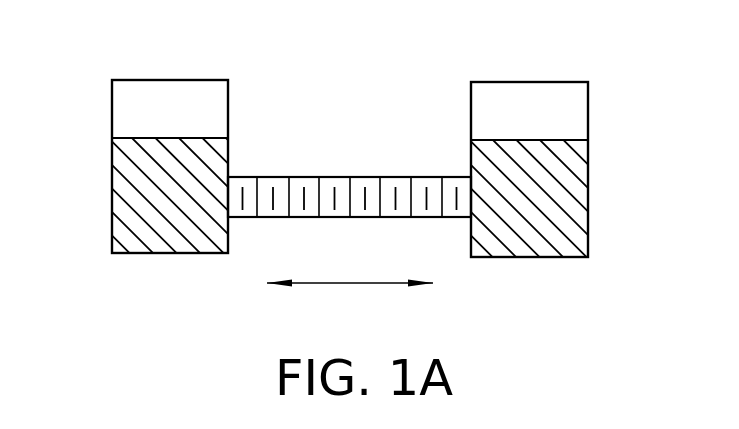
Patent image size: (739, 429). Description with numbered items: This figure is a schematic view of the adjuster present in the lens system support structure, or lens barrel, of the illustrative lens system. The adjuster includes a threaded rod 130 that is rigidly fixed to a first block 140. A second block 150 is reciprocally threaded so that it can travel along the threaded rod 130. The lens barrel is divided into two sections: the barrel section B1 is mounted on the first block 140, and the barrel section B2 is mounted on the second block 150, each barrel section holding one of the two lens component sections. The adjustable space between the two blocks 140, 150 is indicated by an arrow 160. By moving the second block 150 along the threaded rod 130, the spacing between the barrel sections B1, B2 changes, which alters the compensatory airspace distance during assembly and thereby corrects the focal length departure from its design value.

The threaded rod 130 is at (334, 177).
The first block 140 is at (112, 195).
The second block 150 is at (589, 200).
The arrow 160 is at (342, 283).
The lens barrel section B1 is at (170, 80).
The lens barrel section B2 is at (530, 82).